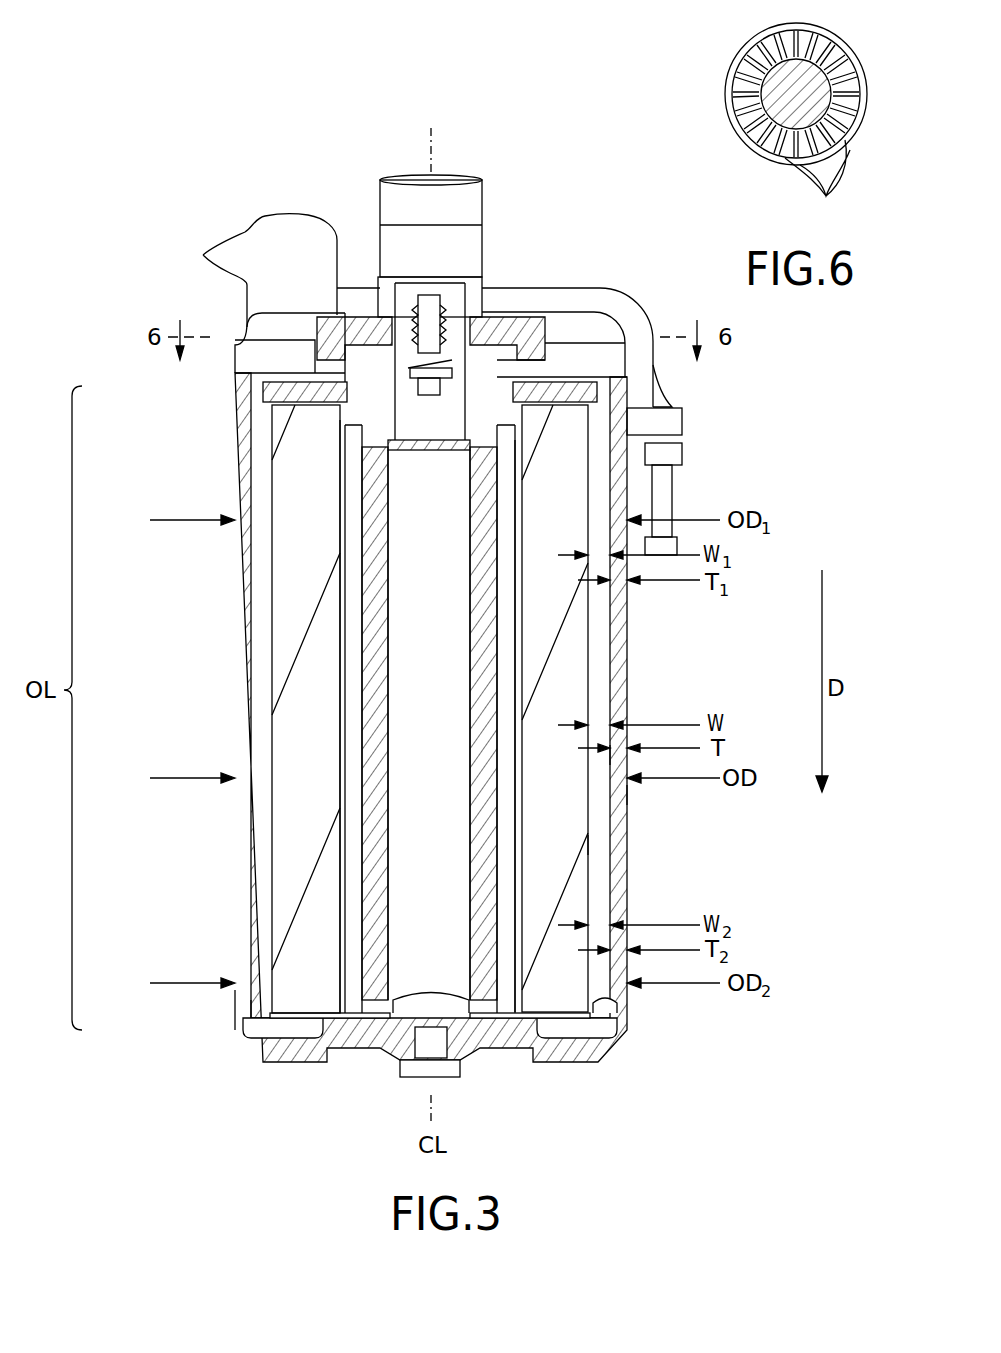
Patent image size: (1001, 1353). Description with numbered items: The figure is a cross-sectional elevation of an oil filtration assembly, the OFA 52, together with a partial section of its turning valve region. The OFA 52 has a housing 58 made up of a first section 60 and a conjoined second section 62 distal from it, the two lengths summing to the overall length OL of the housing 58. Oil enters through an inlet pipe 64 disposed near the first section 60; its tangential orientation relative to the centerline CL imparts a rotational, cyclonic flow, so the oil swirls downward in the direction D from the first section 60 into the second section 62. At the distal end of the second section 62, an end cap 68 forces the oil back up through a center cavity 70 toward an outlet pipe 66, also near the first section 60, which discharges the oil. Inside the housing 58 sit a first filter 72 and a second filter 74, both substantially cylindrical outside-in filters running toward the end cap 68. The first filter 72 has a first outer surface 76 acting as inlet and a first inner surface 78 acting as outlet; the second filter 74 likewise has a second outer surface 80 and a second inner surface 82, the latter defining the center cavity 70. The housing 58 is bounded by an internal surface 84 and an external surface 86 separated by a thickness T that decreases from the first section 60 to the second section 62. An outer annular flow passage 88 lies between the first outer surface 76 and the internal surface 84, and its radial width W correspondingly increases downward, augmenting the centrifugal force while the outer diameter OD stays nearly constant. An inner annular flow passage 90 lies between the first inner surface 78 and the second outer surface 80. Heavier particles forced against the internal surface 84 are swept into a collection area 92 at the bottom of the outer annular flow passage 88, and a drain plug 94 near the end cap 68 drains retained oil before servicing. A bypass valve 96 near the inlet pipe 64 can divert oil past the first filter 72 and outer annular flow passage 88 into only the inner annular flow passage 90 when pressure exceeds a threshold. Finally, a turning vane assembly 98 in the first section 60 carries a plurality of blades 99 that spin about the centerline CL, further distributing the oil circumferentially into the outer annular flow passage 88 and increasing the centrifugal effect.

In FIG. 3, the oil filtration assembly 52 is at (575, 188).
In FIG. 3, the housing 58 is at (618, 1050).
In FIG. 3, the first section 60 is at (237, 565).
In FIG. 3, the second section 62 is at (236, 1010).
In FIG. 3, the inlet pipe 64 is at (203, 255).
In FIG. 3, the outlet pipe 66 is at (452, 178).
In FIG. 3, the end cap 68 is at (592, 1000).
In FIG. 3, the center cavity 70 is at (440, 650).
In FIG. 3, the first filter 72 is at (558, 628).
In FIG. 3, the second filter 74 is at (373, 813).
In FIG. 3, the first outer surface 76 is at (585, 667).
In FIG. 3, the first inner surface 78 is at (514, 690).
In FIG. 3, the second outer surface 80 is at (370, 845).
In FIG. 3, the second inner surface 82 is at (392, 903).
In FIG. 3, the internal surface 84 is at (613, 755).
In FIG. 3, the external surface 86 is at (621, 794).
In FIG. 3, the outer annular flow passage 88 is at (578, 845).
In FIG. 3, the inner annular flow passage 90 is at (350, 935).
In FIG. 3, the collection area 92 is at (268, 1033).
In FIG. 3, the drain plug 94 is at (445, 1047).
In FIG. 3, the bypass valve 96 is at (430, 326).
In FIG. 3, the turning vane assembly 98 is at (253, 353).
In FIG. 6, the turning vane assembly 98 is at (685, 66).
In FIG. 6, the blades 99 is at (817, 184).